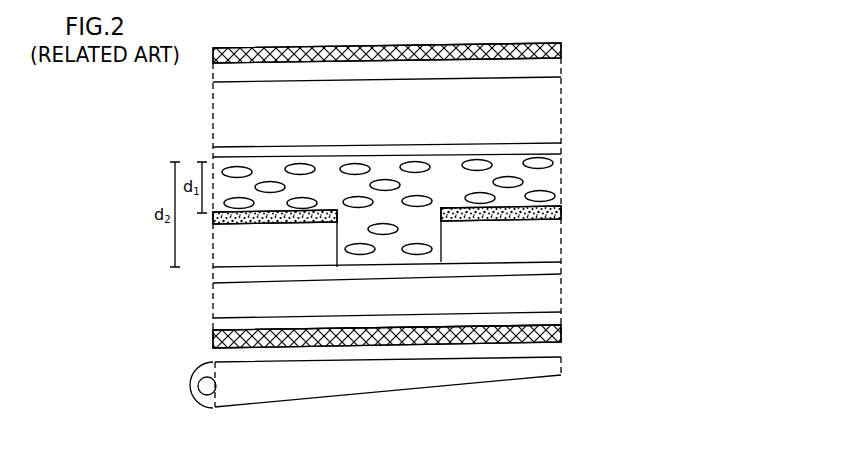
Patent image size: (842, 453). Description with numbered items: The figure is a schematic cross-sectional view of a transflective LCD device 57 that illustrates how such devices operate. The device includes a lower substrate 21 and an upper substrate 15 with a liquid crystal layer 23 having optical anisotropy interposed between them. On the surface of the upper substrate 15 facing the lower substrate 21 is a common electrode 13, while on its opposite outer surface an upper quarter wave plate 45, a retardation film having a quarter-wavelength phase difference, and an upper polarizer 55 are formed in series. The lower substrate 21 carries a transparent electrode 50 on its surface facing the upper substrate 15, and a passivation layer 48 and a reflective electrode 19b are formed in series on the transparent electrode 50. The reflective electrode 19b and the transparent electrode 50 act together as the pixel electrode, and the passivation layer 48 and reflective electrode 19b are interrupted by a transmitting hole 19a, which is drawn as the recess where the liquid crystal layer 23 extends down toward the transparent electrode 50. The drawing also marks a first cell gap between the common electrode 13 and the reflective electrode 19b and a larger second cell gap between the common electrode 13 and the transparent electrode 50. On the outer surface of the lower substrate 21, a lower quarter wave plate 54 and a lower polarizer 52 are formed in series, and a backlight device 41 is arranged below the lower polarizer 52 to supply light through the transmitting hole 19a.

The upper polarizer 55 is at (557, 46).
The upper quarter wave plate 45 is at (556, 63).
The upper substrate 15 is at (556, 100).
The common electrode 13 is at (556, 146).
The liquid crystal layer 23 is at (560, 181).
The transmitting hole 19a is at (414, 213).
The reflective electrode 19b is at (560, 214).
The passivation layer 48 is at (557, 243).
The transparent electrode 50 is at (556, 268).
The lower substrate 21 is at (556, 291).
The lower quarter wave plate 54 is at (557, 319).
The lower polarizer 52 is at (562, 335).
The backlight device 41 is at (556, 369).
The transflective LCD device 57 is at (658, 90).